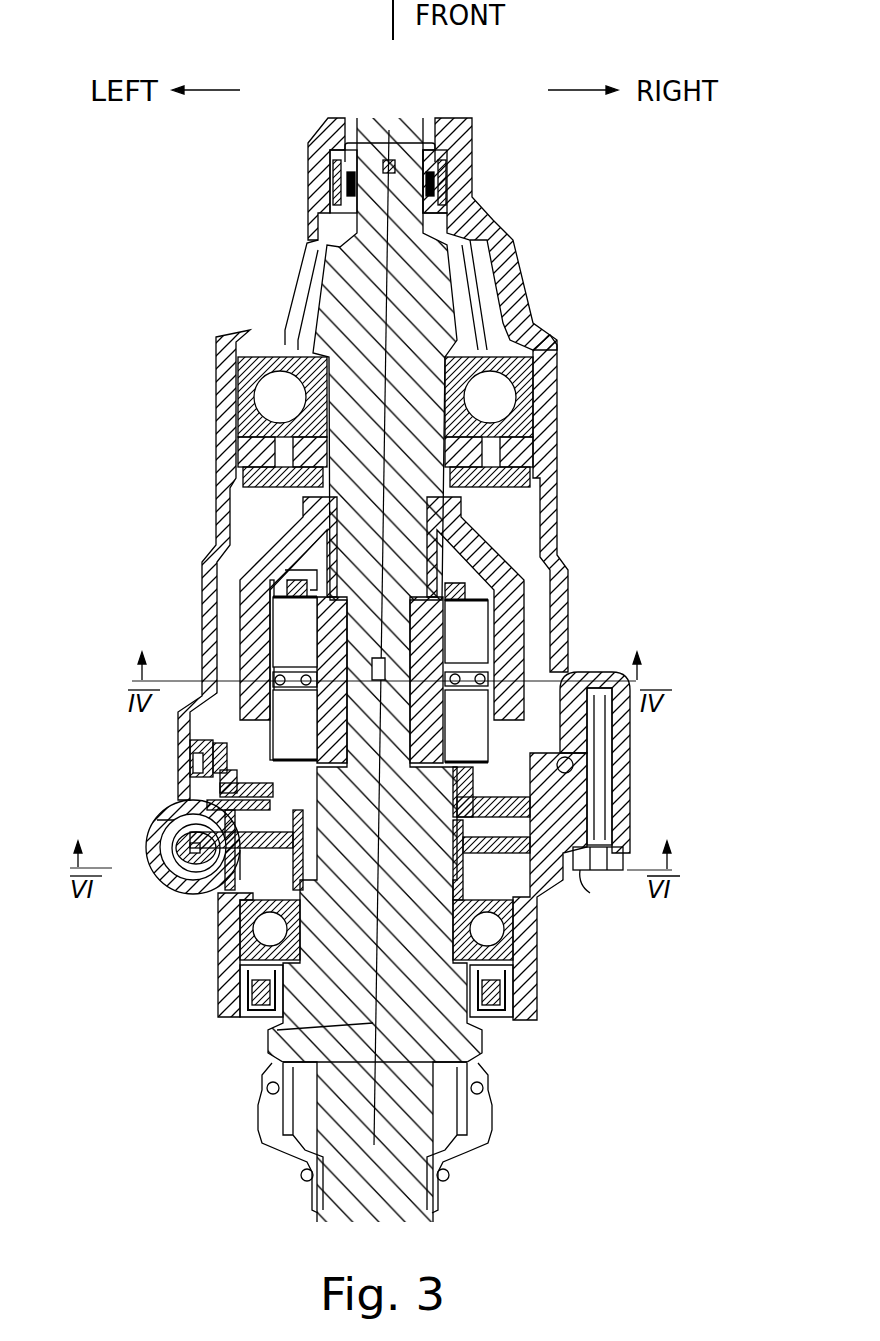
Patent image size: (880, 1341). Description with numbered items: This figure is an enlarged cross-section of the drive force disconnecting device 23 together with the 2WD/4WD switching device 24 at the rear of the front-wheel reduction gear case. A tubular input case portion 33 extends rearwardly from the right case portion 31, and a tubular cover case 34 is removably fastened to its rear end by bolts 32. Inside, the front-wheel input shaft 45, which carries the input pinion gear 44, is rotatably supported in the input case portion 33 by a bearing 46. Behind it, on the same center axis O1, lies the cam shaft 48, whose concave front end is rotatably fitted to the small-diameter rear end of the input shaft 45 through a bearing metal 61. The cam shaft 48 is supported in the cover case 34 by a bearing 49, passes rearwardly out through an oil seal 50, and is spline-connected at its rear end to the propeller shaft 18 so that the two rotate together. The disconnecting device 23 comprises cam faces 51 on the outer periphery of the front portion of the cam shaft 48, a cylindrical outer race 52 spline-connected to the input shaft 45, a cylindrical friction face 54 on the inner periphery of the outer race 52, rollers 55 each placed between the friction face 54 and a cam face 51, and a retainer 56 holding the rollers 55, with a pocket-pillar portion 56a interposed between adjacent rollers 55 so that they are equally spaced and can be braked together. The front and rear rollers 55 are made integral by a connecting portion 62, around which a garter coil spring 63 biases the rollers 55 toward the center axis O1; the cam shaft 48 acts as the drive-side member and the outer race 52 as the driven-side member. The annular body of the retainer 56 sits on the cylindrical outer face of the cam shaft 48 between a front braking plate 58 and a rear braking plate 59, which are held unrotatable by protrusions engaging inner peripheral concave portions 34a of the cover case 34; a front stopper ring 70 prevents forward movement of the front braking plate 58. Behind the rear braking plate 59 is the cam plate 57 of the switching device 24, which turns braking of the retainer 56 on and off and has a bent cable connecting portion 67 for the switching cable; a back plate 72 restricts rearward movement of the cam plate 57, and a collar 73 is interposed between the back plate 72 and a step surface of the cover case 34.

The propeller shaft 18 is at (405, 1143).
The drive force disconnecting device 23 is at (535, 641).
The 2WD/4WD switching device 24 is at (273, 854).
The right case portion 31 is at (473, 165).
The bolts 32 is at (585, 880).
The input case portion 33 is at (224, 496).
The cover case 34 is at (533, 960).
The inner peripheral concave portions 34a is at (187, 741).
The input pinion gear 44 is at (302, 308).
The front-wheel input shaft 45 is at (500, 505).
The bearing 46 is at (270, 405).
The cam shaft 48 is at (367, 950).
The bearing 49 is at (222, 940).
The oil seal 50 is at (500, 1020).
The cam faces 51 is at (432, 752).
The outer race 52 is at (240, 610).
The cylindrical friction face 54 is at (297, 633).
The rollers 55 is at (293, 630).
The retainer 56 is at (215, 809).
The pocket-pillar portion 56a is at (500, 532).
The cam plate 57 is at (293, 833).
The front braking plate 58 is at (180, 790).
The rear braking plate 59 is at (157, 819).
The bearing metal 61 is at (560, 592).
The connecting portion 62 is at (300, 663).
The garter coil spring 63 is at (528, 662).
The cable connecting portion 67 is at (165, 878).
The front stopper ring 70 is at (217, 762).
The back plate 72 is at (205, 897).
The collar 73 is at (187, 893).
The center axis O1 is at (277, 1030).